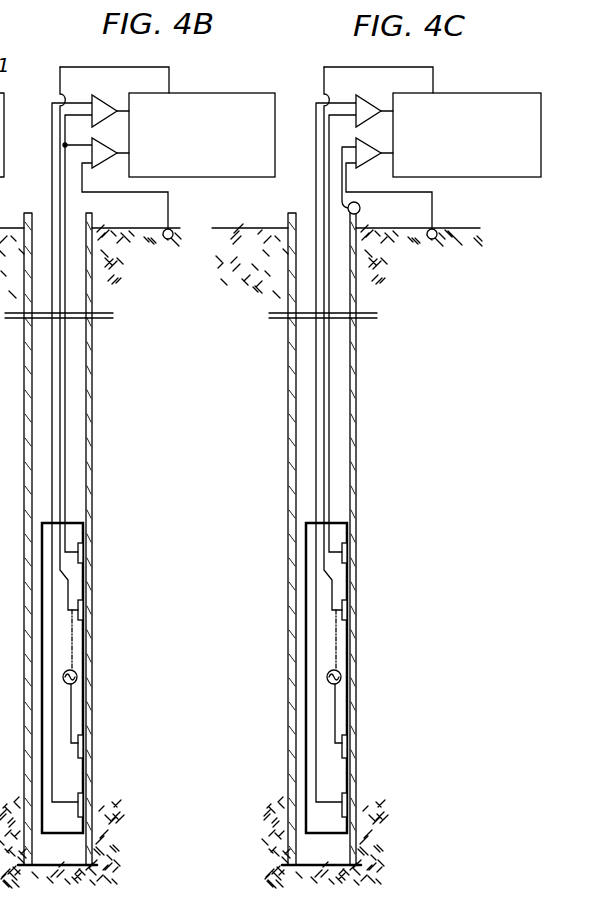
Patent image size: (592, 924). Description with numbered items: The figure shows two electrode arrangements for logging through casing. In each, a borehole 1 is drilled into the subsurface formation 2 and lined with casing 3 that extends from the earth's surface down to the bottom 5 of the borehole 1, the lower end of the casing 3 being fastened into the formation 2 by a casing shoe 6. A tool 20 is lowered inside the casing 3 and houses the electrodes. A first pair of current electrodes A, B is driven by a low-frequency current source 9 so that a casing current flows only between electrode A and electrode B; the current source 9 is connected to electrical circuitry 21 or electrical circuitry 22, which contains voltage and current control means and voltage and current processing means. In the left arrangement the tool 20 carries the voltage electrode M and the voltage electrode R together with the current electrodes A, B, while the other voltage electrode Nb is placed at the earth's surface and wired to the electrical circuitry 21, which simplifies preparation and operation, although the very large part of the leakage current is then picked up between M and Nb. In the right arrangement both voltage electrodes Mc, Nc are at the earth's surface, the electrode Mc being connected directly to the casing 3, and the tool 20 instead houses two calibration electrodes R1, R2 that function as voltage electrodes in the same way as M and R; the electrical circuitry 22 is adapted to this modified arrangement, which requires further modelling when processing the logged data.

In FIG. 4B, the borehole 1 is at (75, 393).
In FIG. 4C, the borehole 1 is at (332, 354).
In FIG. 4B, the subsurface formation 2 is at (6, 294).
In FIG. 4C, the subsurface formation 2 is at (347, 261).
In FIG. 4B, the casing 3 is at (93, 348).
In FIG. 4C, the casing 3 is at (345, 539).
In FIG. 4B, the bottom 5 is at (58, 853).
In FIG. 4C, the bottom 5 is at (323, 885).
In FIG. 4B, the casing shoe 6 is at (97, 860).
In FIG. 4C, the casing shoe 6 is at (340, 831).
In FIG. 4B, the current source 9 is at (84, 681).
In FIG. 4C, the current source 9 is at (361, 704).
In FIG. 4B, the tool 20 is at (93, 663).
In FIG. 4C, the tool 20 is at (357, 663).
In FIG. 4B, the electrical circuitry 21 is at (246, 93).
In FIG. 4C, the electrical circuitry 22 is at (475, 117).
In FIG. 4B, the voltage electrode M is at (97, 552).
In FIG. 4B, the current electrode A is at (95, 609).
In FIG. 4C, the current electrode A is at (359, 609).
In FIG. 4B, the current electrode B is at (95, 749).
In FIG. 4C, the current electrode B is at (359, 749).
In FIG. 4B, the voltage electrode R is at (95, 805).
In FIG. 4C, the calibration electrode R1 is at (363, 808).
In FIG. 4C, the calibration electrode R2 is at (363, 555).
In FIG. 4B, the voltage electrode Nb is at (174, 261).
In FIG. 4C, the voltage electrode Nc is at (448, 261).
In FIG. 4C, the voltage electrode Mc is at (387, 224).